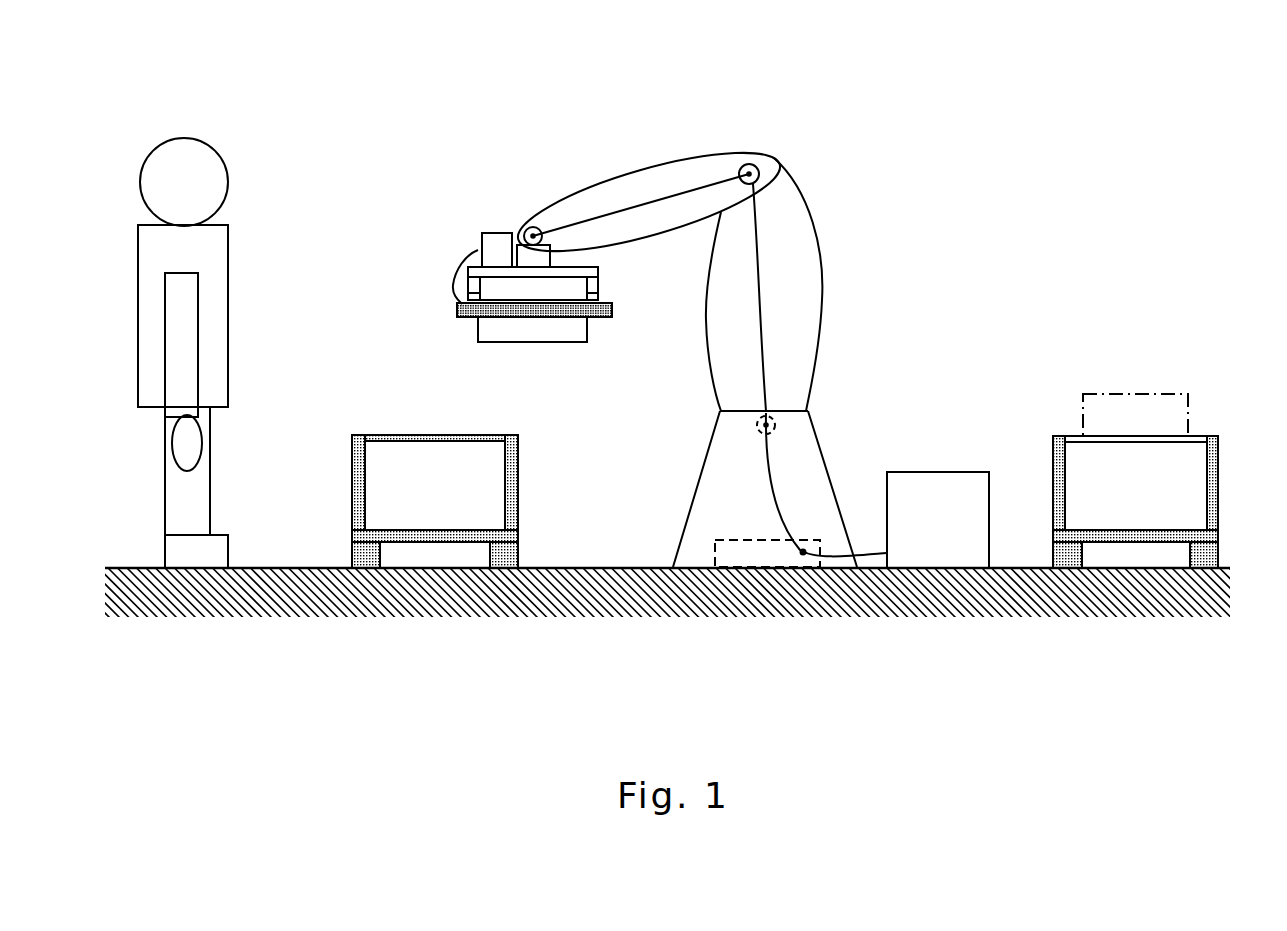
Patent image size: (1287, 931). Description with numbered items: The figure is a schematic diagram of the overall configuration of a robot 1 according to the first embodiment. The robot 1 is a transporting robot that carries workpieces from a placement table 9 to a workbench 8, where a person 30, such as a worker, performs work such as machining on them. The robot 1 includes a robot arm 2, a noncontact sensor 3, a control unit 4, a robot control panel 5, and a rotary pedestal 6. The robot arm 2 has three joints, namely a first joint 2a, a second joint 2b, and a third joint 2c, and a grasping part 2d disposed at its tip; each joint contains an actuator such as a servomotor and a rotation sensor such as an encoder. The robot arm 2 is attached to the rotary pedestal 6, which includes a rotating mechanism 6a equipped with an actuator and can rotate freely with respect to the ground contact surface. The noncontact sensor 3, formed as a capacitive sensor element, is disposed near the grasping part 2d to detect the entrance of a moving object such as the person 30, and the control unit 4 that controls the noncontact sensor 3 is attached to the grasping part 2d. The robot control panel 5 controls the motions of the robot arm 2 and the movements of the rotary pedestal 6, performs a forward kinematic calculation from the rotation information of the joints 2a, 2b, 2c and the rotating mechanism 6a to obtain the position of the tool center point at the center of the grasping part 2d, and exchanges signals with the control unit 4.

The robot 1 is at (817, 144).
The robot arm 2 is at (649, 181).
The first joint 2a is at (533, 227).
The second joint 2b is at (749, 164).
The third joint 2c is at (776, 424).
The grasping part 2d is at (598, 271).
The noncontact sensor 3 is at (601, 318).
The control unit 4 is at (492, 233).
The robot control panel 5 is at (913, 471).
The rotary pedestal 6 is at (768, 486).
The rotating mechanism 6a is at (806, 549).
The workbench 8 is at (352, 440).
The placement table 9 is at (1053, 446).
The person 30 is at (184, 138).